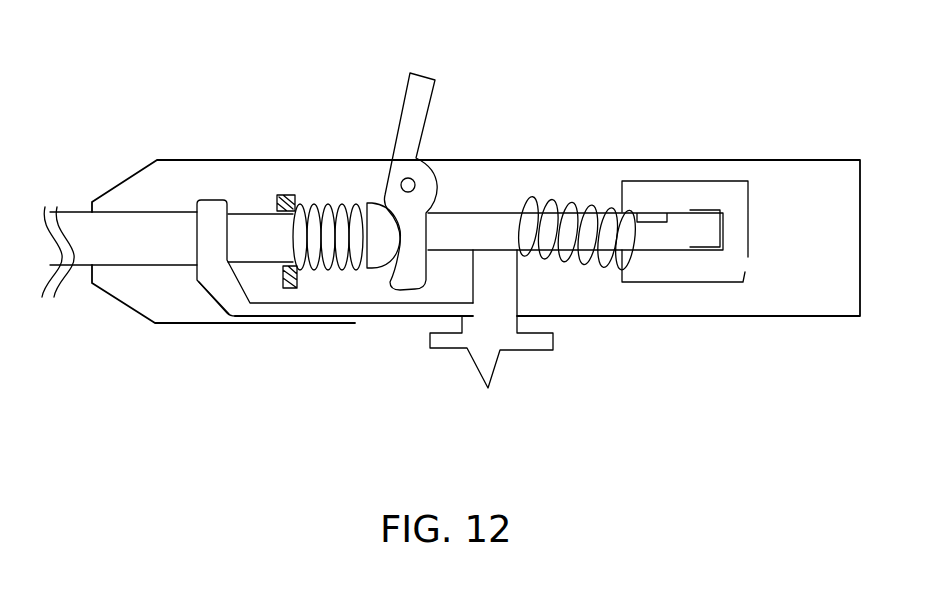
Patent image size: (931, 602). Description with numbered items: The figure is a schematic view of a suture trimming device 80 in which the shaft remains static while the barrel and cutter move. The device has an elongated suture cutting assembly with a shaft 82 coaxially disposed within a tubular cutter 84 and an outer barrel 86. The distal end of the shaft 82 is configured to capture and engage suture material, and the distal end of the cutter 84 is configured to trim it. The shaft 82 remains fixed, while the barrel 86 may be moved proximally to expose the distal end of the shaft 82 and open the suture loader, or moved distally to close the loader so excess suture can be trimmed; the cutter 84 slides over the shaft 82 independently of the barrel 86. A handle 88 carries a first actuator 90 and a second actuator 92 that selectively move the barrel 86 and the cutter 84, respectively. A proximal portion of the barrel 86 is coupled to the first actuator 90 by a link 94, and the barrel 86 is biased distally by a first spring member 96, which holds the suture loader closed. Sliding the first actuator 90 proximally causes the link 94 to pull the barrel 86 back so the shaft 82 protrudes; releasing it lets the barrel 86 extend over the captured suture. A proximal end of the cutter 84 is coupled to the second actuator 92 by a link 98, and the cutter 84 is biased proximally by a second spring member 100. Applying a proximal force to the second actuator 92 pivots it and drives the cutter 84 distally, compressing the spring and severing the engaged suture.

The suture trimming device 80 is at (173, 103).
The shaft 82 is at (447, 212).
The tubular cutter 84 is at (237, 212).
The outer barrel 86 is at (105, 265).
The handle 88 is at (593, 158).
The first actuator 90 is at (500, 350).
The second actuator 92 is at (420, 77).
The link 94 is at (208, 298).
The first spring member 96 is at (567, 253).
The link 98 is at (375, 268).
The second spring member 100 is at (350, 267).